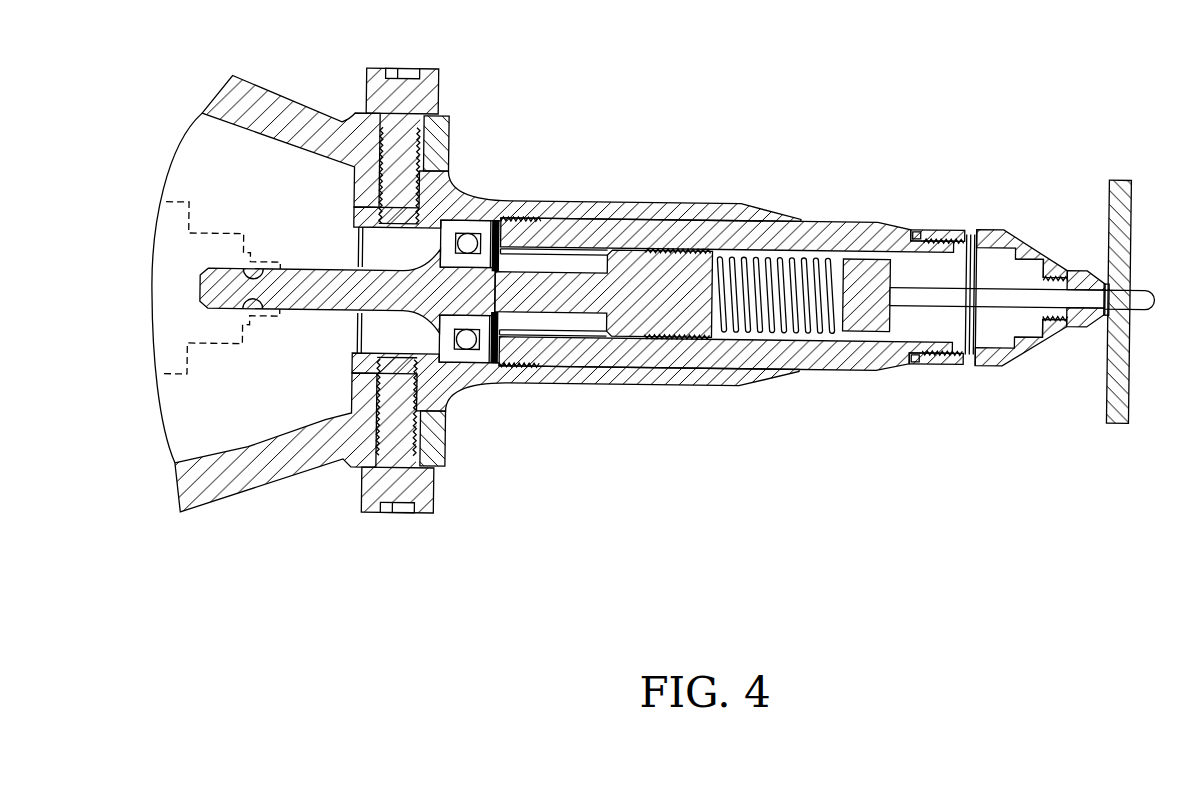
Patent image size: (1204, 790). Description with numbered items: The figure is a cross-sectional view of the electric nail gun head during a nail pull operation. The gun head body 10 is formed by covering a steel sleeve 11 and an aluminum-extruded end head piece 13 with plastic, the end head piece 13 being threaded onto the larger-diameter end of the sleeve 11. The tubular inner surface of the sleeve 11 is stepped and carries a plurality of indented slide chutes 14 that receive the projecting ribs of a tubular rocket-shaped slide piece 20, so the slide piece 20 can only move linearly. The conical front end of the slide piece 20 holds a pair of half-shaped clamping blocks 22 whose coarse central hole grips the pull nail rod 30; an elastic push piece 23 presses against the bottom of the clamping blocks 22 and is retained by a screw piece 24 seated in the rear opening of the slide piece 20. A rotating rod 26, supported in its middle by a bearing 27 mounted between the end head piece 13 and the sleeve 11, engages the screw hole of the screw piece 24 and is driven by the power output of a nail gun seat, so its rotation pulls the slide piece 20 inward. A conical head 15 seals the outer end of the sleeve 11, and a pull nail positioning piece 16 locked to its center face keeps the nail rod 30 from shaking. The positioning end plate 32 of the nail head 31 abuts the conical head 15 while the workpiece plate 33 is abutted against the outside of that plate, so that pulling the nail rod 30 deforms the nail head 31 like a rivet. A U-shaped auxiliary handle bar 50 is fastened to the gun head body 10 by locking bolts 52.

The gun head body 10 is at (632, 170).
The sleeve 11 is at (667, 218).
The end head piece 13 is at (480, 217).
The slide chutes 14 is at (533, 330).
The conical head 15 is at (990, 365).
The pull nail positioning piece 16 is at (1088, 285).
The slide piece 20 is at (852, 315).
The clamping blocks 22 is at (937, 357).
The elastic push piece 23 is at (856, 292).
The screw piece 24 is at (612, 325).
The rotating rod 26 is at (308, 300).
The bearing 27 is at (481, 345).
The pull nail rod 30 is at (1050, 300).
The nail head 31 is at (1134, 303).
The positioning end plate 32 is at (1100, 328).
The workpiece plate 33 is at (1123, 407).
The auxiliary handle bar 50 is at (243, 483).
The locking bolt 52 is at (435, 90).